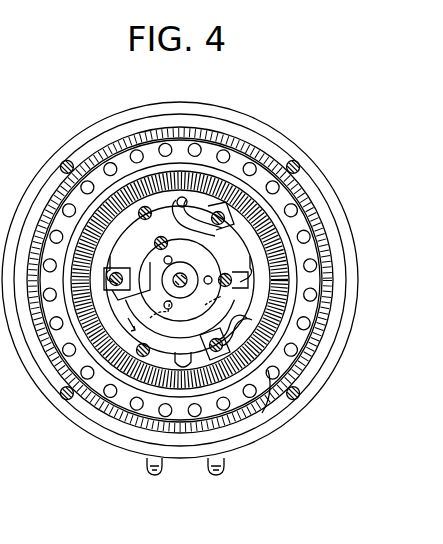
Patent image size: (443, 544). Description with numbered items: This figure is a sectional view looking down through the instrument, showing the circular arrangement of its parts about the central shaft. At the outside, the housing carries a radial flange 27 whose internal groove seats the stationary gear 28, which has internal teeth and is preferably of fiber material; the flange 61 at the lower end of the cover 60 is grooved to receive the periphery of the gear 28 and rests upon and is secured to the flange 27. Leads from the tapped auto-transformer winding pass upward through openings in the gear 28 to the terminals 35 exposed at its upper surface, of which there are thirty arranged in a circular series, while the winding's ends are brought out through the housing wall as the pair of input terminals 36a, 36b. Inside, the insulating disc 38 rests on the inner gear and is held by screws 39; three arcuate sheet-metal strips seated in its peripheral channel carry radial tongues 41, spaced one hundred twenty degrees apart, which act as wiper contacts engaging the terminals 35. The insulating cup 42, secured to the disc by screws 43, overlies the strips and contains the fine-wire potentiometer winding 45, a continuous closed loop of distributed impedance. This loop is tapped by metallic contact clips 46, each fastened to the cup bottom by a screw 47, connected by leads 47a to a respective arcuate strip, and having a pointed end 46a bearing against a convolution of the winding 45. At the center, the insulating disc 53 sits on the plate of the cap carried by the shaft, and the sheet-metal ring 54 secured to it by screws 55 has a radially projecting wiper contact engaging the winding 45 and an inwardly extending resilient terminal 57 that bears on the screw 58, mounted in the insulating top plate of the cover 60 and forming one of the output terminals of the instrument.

The radial flange 27 is at (97, 433).
The gear 28 is at (97, 415).
The terminals 35 is at (195, 143).
The input terminal 36a is at (150, 476).
The input terminal 36b is at (215, 476).
The disc 38 is at (228, 240).
The screws 39 is at (173, 315).
The radial tongues 41 is at (60, 200).
The cup 42 is at (90, 200).
The screws 43 is at (102, 200).
The potentiometer winding 45 is at (277, 233).
The contact clips 46 is at (196, 138).
The pointed end 46a is at (262, 413).
The screws 47 is at (124, 292).
The leads 47a is at (158, 124).
The disc 53 is at (172, 278).
The ring 54 is at (165, 280).
The screws 55 is at (236, 275).
The resilient terminal 57 is at (130, 276).
The screw 58 is at (190, 273).
The cover 60 is at (332, 260).
The flange 61 is at (330, 217).